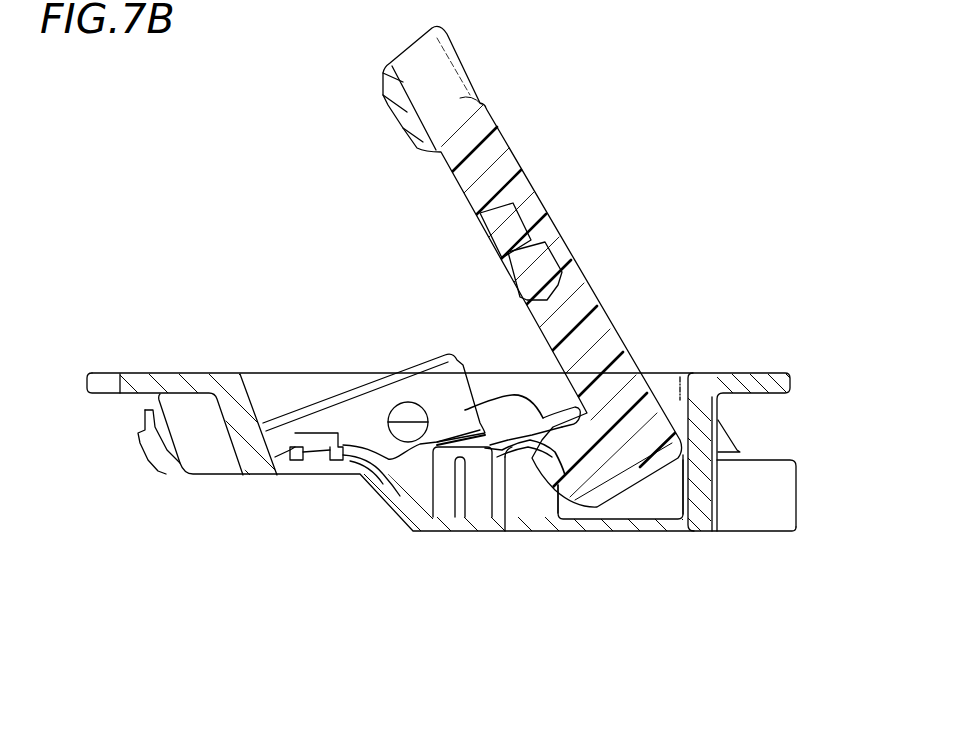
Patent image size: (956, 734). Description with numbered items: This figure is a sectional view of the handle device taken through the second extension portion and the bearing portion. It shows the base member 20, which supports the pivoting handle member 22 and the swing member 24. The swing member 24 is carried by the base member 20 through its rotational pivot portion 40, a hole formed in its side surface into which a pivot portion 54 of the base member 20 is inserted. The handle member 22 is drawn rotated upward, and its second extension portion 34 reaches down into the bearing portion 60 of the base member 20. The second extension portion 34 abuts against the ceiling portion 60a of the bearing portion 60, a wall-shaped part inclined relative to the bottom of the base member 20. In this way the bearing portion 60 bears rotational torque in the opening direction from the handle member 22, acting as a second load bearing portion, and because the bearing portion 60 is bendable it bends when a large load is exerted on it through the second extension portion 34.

The base member 20 is at (178, 371).
The handle member 22 is at (515, 160).
The swing member 24 is at (349, 410).
The second extension portion 34 is at (553, 468).
The rotational pivot portion 40 is at (398, 442).
The pivot portion 54 is at (408, 402).
The bearing portion 60 is at (520, 490).
The ceiling portion 60a is at (540, 418).